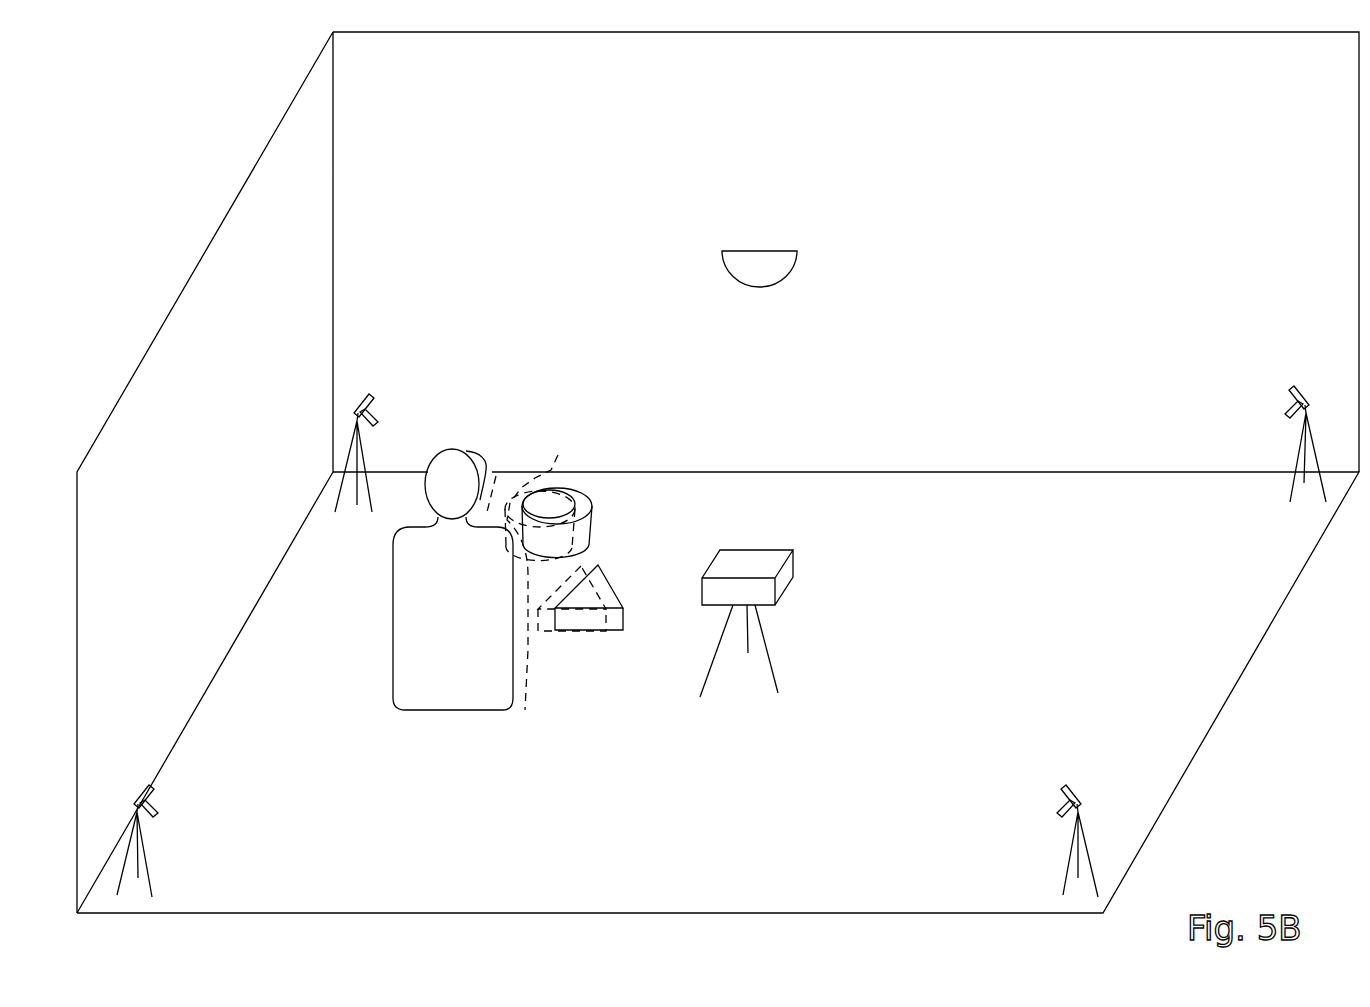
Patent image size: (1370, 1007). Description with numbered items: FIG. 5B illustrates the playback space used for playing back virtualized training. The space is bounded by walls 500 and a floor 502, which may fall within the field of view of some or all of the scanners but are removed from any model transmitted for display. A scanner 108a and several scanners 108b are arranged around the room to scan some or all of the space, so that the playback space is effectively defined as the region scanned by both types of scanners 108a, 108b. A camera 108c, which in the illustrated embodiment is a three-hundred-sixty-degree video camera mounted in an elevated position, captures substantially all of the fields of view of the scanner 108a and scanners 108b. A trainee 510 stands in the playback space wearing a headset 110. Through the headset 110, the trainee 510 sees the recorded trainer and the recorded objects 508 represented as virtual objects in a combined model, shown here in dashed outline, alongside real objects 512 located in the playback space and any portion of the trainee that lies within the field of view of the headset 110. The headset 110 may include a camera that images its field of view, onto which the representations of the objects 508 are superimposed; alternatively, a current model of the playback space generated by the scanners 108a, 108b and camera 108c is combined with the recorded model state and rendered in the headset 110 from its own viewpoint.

The scanner 108a is at (757, 562).
The scanners 108b is at (157, 800).
The camera 108c is at (758, 252).
The headset 110 is at (485, 462).
The walls 500 is at (976, 286).
The floor 502 is at (794, 818).
The objects 508 is at (590, 668).
The trainee 510 is at (431, 595).
The objects located in the playback space 512 is at (593, 521).